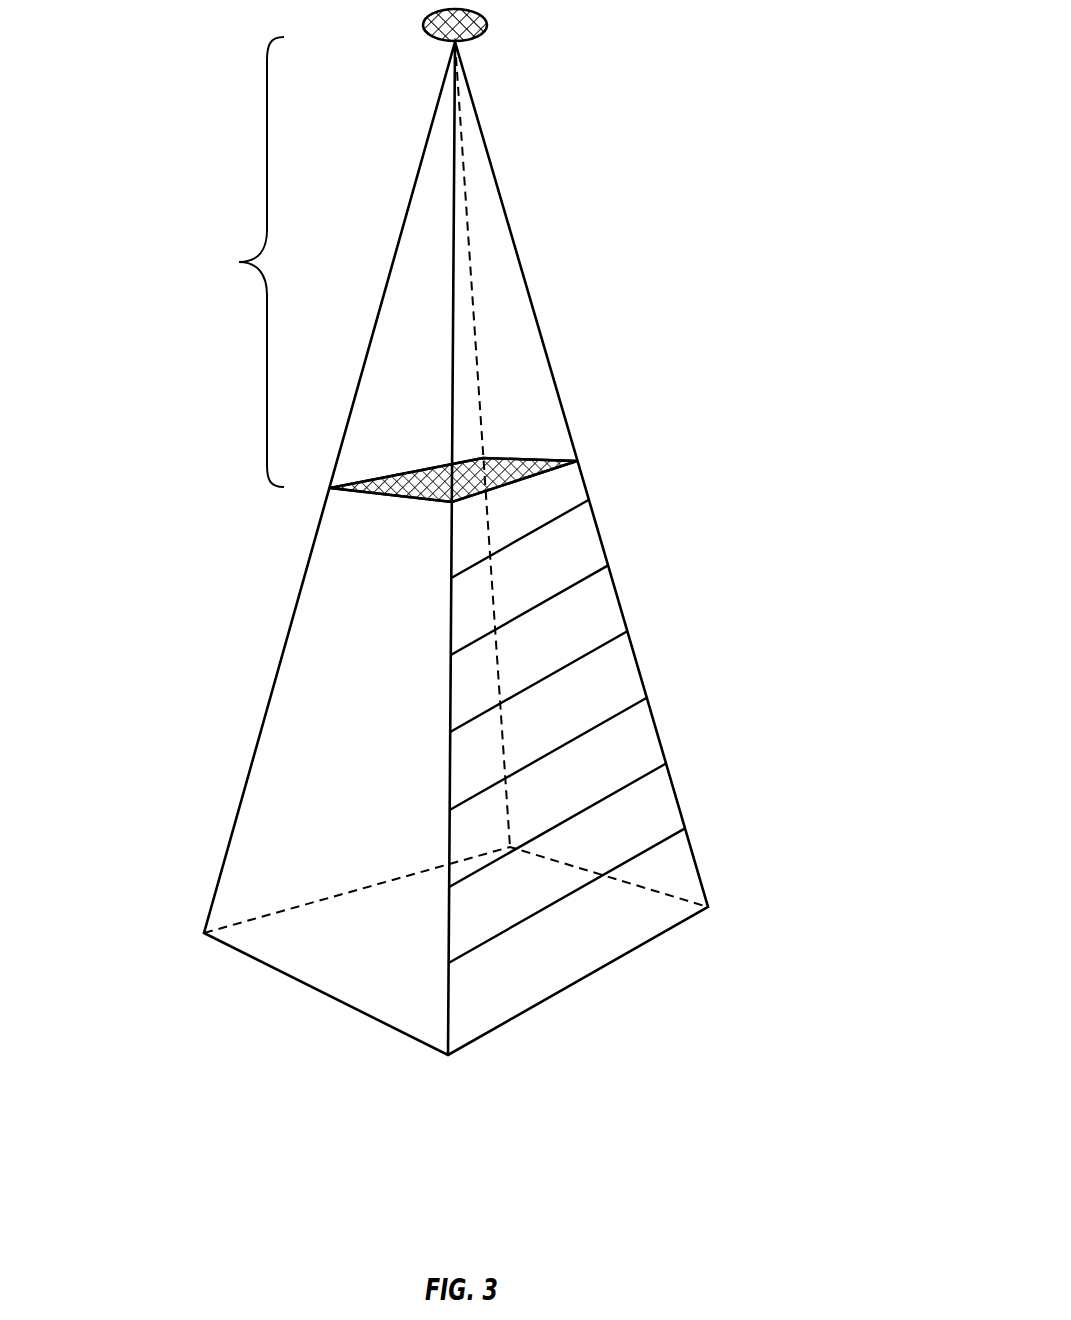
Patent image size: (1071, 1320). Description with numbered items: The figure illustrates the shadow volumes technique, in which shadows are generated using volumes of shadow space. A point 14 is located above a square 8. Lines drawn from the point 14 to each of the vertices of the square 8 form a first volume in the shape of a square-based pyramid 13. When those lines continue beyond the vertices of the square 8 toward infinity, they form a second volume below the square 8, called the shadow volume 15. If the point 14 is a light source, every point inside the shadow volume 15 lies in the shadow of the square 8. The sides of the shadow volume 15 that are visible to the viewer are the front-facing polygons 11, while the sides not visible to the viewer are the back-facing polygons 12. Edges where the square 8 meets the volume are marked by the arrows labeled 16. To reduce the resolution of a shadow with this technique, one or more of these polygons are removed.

The square 8 is at (520, 448).
The front-facing polygons 11 is at (537, 1048).
The back-facing polygons 12 is at (522, 654).
The square-based pyramid 13 is at (245, 262).
The point 14 is at (526, 25).
The shadow volume 15 is at (725, 1088).
The silhouette edge 16 is at (322, 492).